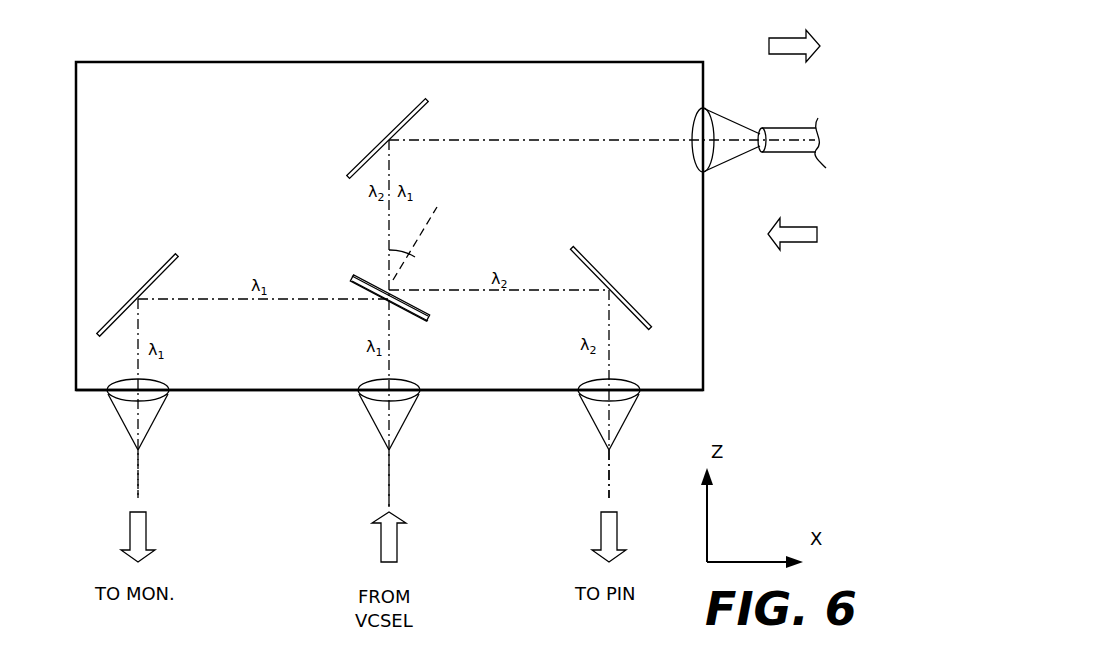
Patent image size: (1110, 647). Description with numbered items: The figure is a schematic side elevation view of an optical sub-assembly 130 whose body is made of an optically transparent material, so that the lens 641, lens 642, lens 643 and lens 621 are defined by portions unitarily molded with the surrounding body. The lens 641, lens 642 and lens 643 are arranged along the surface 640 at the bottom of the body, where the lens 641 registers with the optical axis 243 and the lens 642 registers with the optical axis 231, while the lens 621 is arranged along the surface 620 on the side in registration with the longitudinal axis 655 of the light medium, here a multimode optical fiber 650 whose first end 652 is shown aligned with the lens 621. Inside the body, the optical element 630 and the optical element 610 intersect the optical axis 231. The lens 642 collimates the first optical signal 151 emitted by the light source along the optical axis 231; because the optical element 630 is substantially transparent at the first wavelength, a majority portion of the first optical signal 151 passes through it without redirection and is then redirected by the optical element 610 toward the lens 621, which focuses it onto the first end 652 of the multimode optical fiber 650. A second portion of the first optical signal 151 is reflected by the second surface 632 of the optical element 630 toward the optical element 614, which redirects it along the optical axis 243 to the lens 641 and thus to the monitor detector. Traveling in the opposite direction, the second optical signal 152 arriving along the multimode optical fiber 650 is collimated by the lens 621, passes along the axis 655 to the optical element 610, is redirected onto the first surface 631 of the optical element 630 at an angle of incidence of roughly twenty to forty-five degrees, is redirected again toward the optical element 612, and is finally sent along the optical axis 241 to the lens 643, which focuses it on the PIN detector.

The optical sub-assembly 130 is at (139, 89).
The optical element 610 is at (427, 98).
The optical element 612 is at (590, 262).
The optical element 614 is at (177, 255).
The surface 620 is at (724, 327).
The lens 621 is at (703, 108).
The optical element 630 is at (424, 295).
The first surface 631 is at (361, 266).
The second surface 632 is at (412, 325).
The surface 640 is at (550, 400).
The lens 641 is at (157, 388).
The lens 642 is at (408, 388).
The lens 643 is at (622, 387).
The multimode optical fiber 650 is at (800, 153).
The first end 652 is at (775, 120).
The longitudinal axis 655 is at (588, 143).
The optical axis 243 is at (140, 483).
The optical axis 231 is at (390, 497).
The optical axis 241 is at (610, 490).
The first optical signal 151 is at (143, 535).
The second optical signal 152 is at (614, 535).